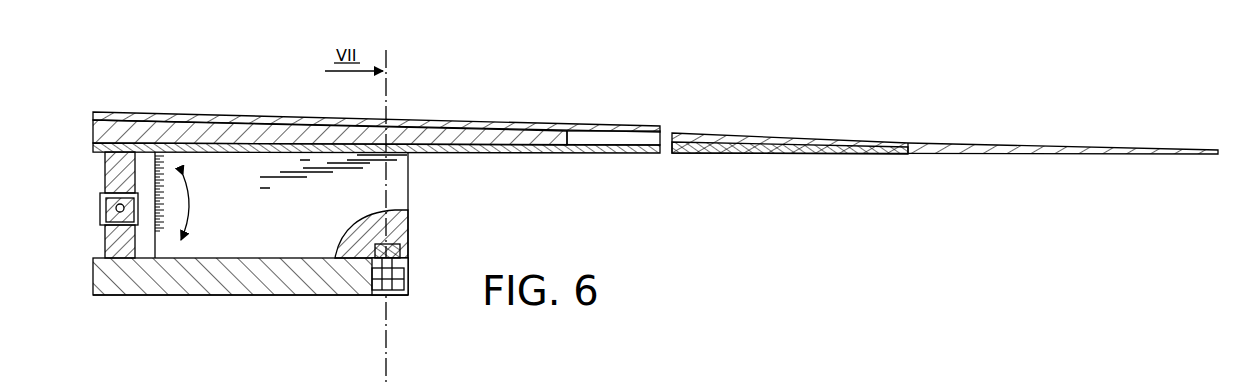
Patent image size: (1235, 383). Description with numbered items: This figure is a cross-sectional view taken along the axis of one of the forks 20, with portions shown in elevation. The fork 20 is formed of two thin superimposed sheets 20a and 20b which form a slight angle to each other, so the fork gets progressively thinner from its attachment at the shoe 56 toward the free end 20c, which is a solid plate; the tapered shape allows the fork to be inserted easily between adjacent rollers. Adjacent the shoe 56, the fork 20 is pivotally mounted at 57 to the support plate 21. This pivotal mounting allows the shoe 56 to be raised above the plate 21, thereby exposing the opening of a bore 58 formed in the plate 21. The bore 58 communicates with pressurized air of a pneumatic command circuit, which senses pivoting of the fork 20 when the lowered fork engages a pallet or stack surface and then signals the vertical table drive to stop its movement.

The fork 20 is at (655, 153).
The upper sheet of fork 20a is at (593, 126).
The lower sheet of fork 20b is at (580, 153).
The free end of fork 20c is at (1098, 153).
The support plate 21 is at (205, 280).
The shoe 56 is at (408, 190).
The pivotal mounting 57 is at (116, 210).
The bore 58 is at (393, 295).